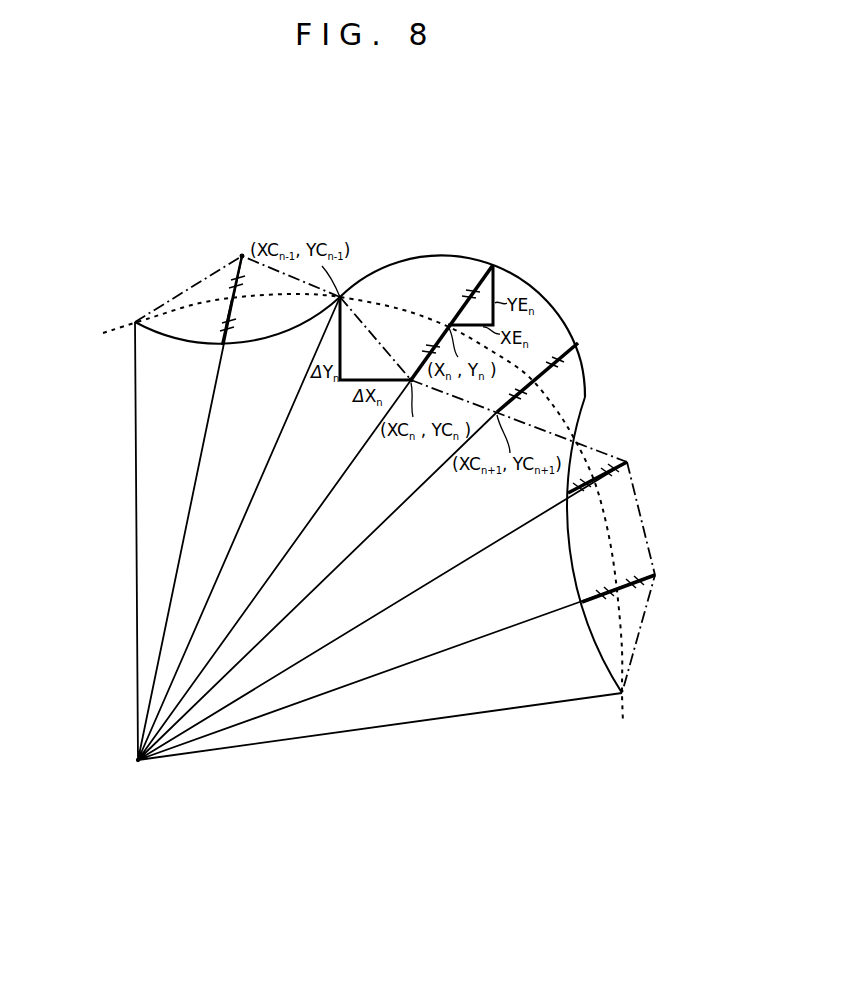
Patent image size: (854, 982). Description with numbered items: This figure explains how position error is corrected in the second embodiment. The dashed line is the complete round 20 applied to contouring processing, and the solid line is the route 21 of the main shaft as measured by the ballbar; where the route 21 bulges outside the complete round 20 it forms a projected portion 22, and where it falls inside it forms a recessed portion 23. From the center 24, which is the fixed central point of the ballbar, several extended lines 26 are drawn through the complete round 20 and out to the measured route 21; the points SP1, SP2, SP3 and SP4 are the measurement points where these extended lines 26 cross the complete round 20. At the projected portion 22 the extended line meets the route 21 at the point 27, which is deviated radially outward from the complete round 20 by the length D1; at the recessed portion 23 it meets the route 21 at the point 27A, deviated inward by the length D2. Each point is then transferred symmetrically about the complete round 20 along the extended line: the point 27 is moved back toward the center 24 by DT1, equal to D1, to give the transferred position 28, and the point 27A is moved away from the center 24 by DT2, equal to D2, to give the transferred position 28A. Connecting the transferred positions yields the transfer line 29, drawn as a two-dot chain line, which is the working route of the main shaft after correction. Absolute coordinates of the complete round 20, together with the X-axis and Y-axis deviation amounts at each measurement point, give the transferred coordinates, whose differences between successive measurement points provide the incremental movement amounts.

The complete round 20 is at (613, 537).
The route of the main shaft 21 is at (585, 400).
The projected portion 22 is at (583, 355).
The recessed portion 23 is at (135, 325).
The center 24 is at (138, 760).
The extended line 26 is at (308, 517).
The point 27 is at (493, 267).
The point 27A is at (230, 356).
The transferred position 28 is at (411, 380).
The transferred position 28A is at (242, 256).
The transfer line 29 is at (180, 292).
The length D1 is at (458, 280).
The length D2 is at (218, 323).
The transfer distance DT1 is at (425, 347).
The transfer distance DT2 is at (225, 278).
The measurement point SP1 is at (340, 297).
The measurement point SP2 is at (458, 353).
The measurement point SP3 is at (547, 363).
The measurement point SP4 is at (600, 483).